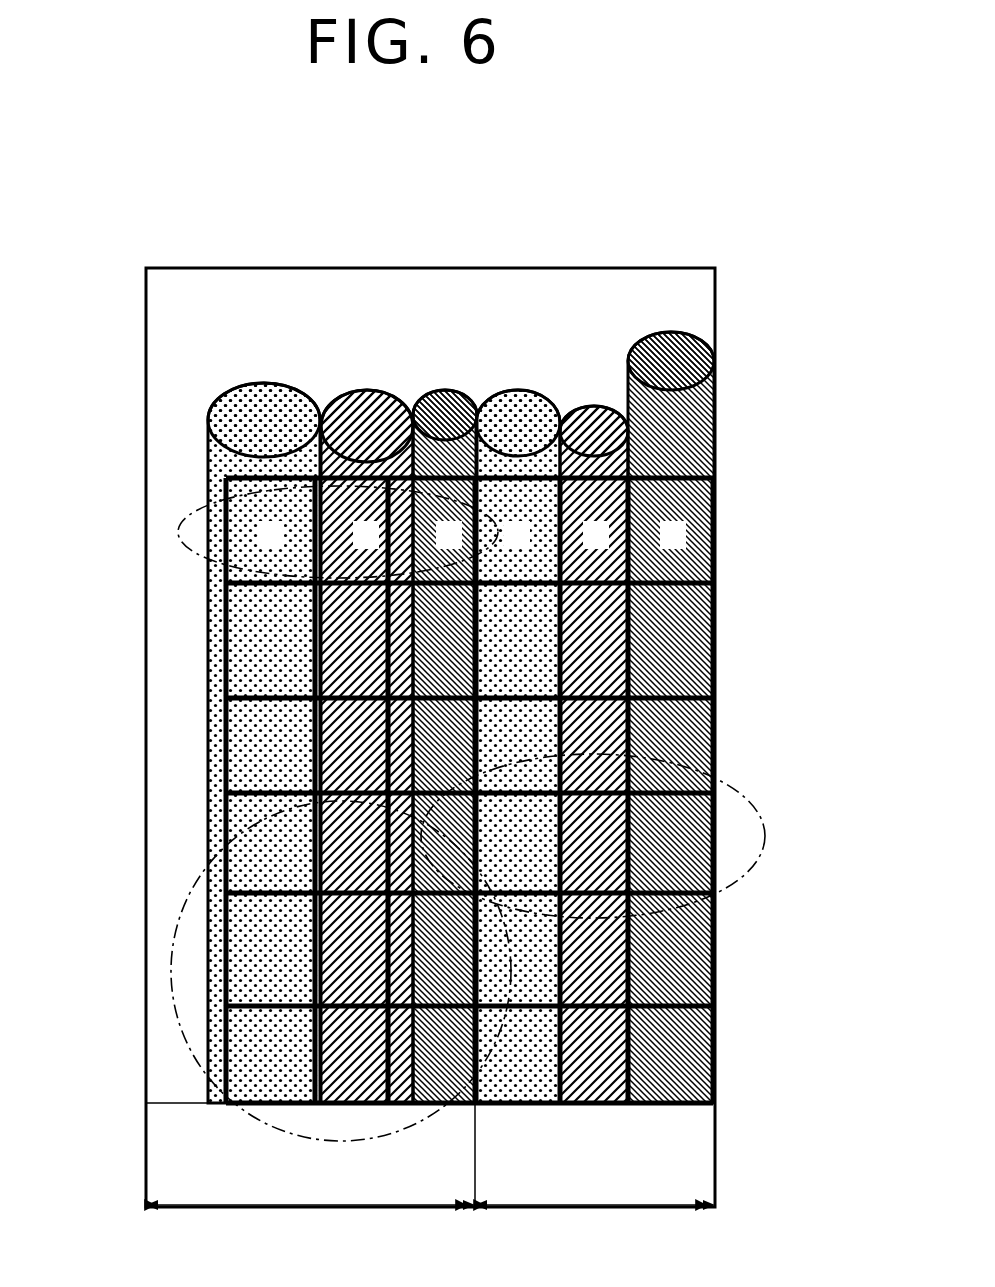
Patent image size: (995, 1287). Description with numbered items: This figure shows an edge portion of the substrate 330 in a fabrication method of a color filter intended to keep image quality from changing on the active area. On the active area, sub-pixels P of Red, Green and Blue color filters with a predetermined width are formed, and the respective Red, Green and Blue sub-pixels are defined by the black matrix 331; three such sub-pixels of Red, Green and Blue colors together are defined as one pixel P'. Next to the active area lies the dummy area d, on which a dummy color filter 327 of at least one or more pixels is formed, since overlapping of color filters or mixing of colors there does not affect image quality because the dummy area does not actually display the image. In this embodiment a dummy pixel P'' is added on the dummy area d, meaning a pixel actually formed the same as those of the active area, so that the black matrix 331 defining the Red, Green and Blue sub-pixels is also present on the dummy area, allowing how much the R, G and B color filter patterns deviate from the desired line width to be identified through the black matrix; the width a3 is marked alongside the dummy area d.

The substrate 330 is at (430, 683).
The dummy color filter 327 is at (186, 500).
The black matrix 331 is at (707, 936).
The sub-pixel P is at (622, 836).
The pixel P' is at (744, 811).
The dummy pixel P'' is at (290, 968).
The dummy area d is at (305, 1189).
The pixel width a3 is at (595, 1189).